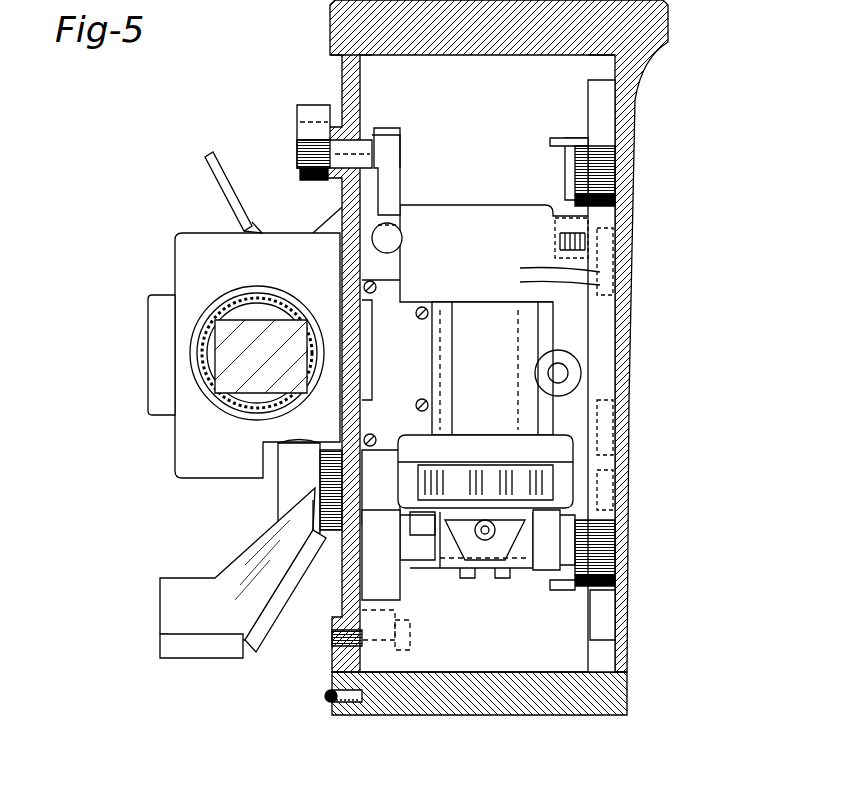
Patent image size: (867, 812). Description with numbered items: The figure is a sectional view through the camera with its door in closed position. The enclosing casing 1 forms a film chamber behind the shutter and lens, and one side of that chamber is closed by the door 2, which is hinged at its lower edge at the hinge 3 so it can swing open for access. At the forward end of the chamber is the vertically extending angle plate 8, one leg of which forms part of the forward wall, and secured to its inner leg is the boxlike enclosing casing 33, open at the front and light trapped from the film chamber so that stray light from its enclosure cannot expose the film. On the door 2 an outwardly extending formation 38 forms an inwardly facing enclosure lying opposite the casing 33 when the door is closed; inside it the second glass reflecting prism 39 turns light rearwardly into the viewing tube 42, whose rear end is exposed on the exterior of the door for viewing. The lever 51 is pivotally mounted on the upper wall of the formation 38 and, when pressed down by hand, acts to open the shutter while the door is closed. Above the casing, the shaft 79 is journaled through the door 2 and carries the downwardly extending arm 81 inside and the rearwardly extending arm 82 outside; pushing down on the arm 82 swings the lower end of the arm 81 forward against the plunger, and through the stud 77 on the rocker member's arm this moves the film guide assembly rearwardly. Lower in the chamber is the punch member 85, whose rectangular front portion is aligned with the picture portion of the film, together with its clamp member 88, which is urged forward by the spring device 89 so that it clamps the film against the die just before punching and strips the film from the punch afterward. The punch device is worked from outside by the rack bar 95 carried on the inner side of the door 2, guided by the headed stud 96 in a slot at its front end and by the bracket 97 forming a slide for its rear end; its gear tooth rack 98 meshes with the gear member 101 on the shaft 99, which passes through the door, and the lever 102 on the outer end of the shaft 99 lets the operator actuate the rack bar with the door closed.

The enclosing casing 1 is at (632, 93).
The door 2 is at (333, 35).
The hinge 3 is at (330, 696).
The angle plate 8 is at (605, 218).
The boxlike enclosing casing 33 is at (520, 272).
The formation 38 is at (190, 262).
The second glass reflecting prism 39 is at (228, 352).
The viewing tube 42 is at (205, 393).
The lever 51 is at (210, 160).
The stud 77 is at (400, 235).
The shaft 79 is at (300, 148).
The downwardly extending arm 81 is at (393, 190).
The rearwardly extending arm 82 is at (305, 110).
The punch member 85 is at (545, 494).
The clamp member 88 is at (580, 520).
The spring device 89 is at (503, 545).
The rack bar 95 is at (388, 605).
The headed stud 96 is at (413, 565).
The bracket 97 is at (392, 540).
The gear tooth rack 98 is at (417, 575).
The shaft 99 is at (280, 485).
The gear member 101 is at (322, 545).
The lever 102 is at (165, 628).